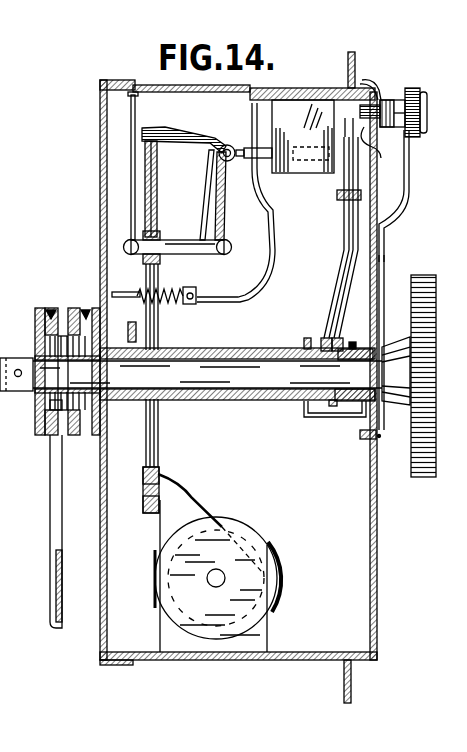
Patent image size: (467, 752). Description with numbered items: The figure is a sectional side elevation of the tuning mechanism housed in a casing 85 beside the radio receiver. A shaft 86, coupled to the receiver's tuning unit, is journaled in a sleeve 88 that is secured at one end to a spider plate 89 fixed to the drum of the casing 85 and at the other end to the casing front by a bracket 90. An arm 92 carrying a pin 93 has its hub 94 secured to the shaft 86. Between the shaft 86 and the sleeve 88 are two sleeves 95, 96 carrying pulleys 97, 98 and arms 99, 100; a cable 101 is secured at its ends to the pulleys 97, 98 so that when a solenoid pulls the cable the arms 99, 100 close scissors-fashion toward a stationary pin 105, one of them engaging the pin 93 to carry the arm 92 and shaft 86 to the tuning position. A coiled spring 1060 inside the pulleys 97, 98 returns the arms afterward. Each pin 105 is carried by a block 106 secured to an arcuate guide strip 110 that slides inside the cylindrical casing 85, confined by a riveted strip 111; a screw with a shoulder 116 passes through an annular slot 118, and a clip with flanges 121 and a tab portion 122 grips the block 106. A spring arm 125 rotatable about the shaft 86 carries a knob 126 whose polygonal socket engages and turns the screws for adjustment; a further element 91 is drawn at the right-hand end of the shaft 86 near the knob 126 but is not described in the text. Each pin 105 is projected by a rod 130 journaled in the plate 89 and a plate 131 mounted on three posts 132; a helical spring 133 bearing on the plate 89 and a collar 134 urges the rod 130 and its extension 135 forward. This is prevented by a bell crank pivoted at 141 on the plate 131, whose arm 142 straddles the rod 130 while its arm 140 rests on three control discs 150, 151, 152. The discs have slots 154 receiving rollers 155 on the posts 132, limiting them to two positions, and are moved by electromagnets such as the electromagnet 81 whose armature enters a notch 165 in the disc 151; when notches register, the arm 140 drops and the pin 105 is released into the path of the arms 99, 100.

The electromagnet 81 is at (269, 542).
The casing 85 is at (361, 574).
The shaft 86 is at (262, 378).
The sleeve 88 is at (192, 401).
The spider plate 89 is at (131, 155).
The bracket 90 is at (318, 416).
The knob 91 is at (424, 284).
The arm 92 is at (383, 262).
The pin 93 is at (338, 197).
The hub 94 is at (351, 401).
The sleeve 95 is at (99, 423).
The sleeve 96 is at (99, 401).
The pulley 97 is at (40, 308).
The pulley 98 is at (72, 308).
The arm 99 is at (344, 253).
The arm 100 is at (341, 282).
The cable 101 is at (53, 308).
The pin 105 is at (246, 148).
The block 106 is at (297, 128).
The arcuate guide strip 110 is at (349, 88).
The strip 111 is at (267, 92).
The shoulder 116 is at (382, 98).
The annular slot 118 is at (382, 150).
The flange 121 is at (360, 116).
The tab portion 122 is at (362, 78).
The spring arm 125 is at (410, 182).
The knob 126 is at (418, 90).
The rod 130 is at (122, 291).
The plate 131 is at (222, 192).
The post 132 is at (188, 242).
The helical spring 133 is at (168, 303).
The collar 134 is at (188, 291).
The extension 135 is at (272, 241).
The arm 140 is at (155, 133).
The pivot 141 is at (221, 146).
The arm 142 is at (208, 197).
The control disc 150 is at (143, 491).
The control disc 151 is at (150, 505).
The control disc 152 is at (157, 518).
The slot 154 is at (152, 213).
The roller 155 is at (133, 245).
The notch 165 is at (158, 472).
The coiled spring 1060 is at (53, 403).